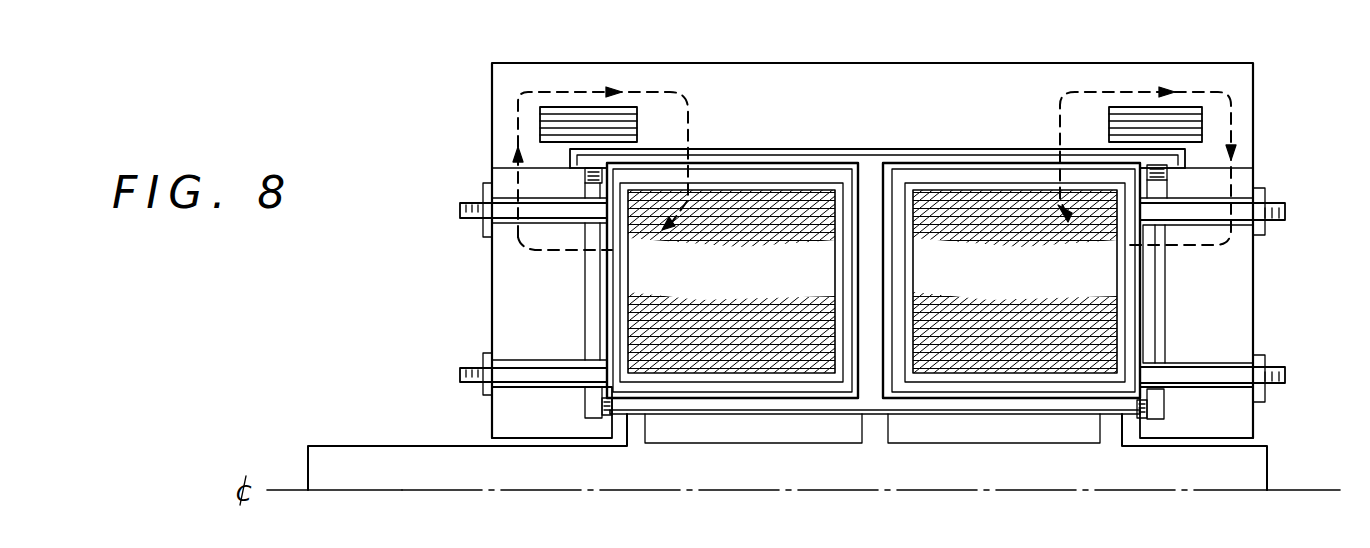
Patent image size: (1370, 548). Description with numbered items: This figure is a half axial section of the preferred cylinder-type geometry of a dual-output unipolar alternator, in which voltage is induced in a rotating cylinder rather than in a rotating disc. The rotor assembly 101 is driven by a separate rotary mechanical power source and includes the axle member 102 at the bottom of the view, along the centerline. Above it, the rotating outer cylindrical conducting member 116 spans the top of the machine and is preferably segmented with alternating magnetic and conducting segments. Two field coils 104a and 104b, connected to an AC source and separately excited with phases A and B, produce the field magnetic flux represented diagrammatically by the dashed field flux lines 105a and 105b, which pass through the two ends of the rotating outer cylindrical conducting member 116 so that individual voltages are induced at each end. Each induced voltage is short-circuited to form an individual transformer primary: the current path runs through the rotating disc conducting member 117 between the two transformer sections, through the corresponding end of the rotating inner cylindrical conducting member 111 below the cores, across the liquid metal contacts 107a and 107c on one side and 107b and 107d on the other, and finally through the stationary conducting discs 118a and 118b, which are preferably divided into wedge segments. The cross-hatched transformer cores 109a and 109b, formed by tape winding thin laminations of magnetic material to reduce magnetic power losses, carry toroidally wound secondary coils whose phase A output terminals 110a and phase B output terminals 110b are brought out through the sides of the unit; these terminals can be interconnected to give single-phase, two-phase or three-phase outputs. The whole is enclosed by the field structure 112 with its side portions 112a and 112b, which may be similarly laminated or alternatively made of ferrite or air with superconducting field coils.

The rotor assembly 101 is at (404, 447).
The axle member 102 is at (900, 483).
The field coil 104a is at (540, 127).
The field coil 104b is at (1202, 120).
The field flux lines 105a is at (764, 103).
The field flux lines 105b is at (1225, 54).
The liquid metal contact 107a is at (585, 172).
The liquid metal contact 107b is at (1167, 177).
The liquid metal contact 107c is at (585, 412).
The liquid metal contact 107d is at (1260, 424).
The transformer core 109a is at (752, 285).
The transformer core 109b is at (1064, 285).
The phase A output terminals 110a is at (460, 216).
The phase B output terminals 110b is at (1365, 257).
The rotating inner cylindrical conducting member 111 is at (942, 413).
The field structure 112 is at (930, 127).
The field structure 112a is at (565, 305).
The field structure 112b is at (1228, 305).
The rotating outer cylindrical conducting member 116 is at (748, 158).
The rotating disc conducting member 117 is at (875, 256).
The stationary conducting disc 118a is at (597, 344).
The stationary conducting disc 118b is at (1250, 344).